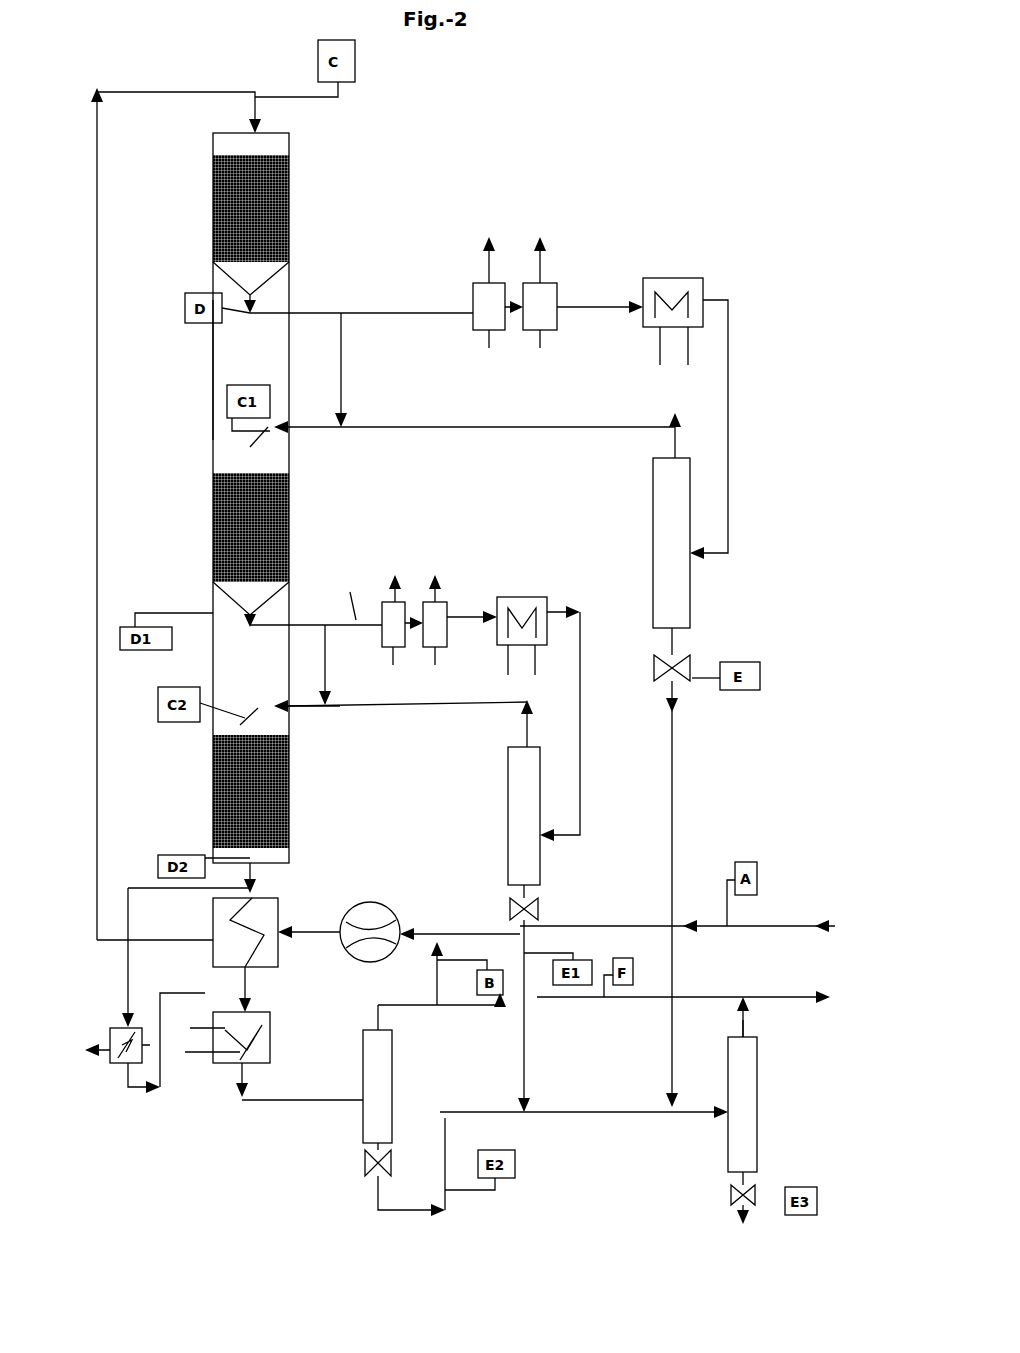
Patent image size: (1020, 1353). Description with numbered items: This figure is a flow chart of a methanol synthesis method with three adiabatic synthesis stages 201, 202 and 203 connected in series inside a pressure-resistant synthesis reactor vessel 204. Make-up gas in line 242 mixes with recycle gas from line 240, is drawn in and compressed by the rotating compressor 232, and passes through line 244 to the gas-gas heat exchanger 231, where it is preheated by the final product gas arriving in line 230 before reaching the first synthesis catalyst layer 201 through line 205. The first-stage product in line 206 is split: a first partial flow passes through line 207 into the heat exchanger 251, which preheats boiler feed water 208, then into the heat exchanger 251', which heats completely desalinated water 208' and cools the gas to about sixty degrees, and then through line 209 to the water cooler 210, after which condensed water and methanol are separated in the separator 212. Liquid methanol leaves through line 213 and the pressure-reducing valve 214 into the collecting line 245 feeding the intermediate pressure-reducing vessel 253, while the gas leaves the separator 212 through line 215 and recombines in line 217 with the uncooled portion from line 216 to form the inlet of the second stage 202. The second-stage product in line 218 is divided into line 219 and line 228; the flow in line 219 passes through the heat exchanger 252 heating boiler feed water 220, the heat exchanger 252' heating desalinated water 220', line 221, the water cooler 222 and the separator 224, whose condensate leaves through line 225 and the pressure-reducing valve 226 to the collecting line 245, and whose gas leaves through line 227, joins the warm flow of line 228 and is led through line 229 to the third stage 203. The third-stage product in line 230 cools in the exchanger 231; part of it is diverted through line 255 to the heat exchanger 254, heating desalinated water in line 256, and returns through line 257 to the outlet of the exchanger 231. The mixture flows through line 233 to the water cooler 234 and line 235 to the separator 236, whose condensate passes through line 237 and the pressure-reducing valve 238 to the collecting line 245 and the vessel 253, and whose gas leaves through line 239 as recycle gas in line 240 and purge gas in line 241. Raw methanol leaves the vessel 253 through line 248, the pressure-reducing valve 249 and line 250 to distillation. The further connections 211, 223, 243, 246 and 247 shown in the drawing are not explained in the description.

The first synthesis stage 201 is at (213, 225).
The second synthesis stage 202 is at (213, 502).
The third synthesis stage 203 is at (213, 803).
The synthesis reactor vessel 204 is at (213, 358).
The line 205 is at (97, 497).
The line 206 is at (305, 315).
The line 207 is at (383, 307).
The boiler feed water 208 is at (466, 260).
The completely desalinated water 208' is at (572, 260).
The line 209 is at (600, 299).
The water cooler 210 is at (690, 292).
The mixer outlet line 211 is at (728, 400).
The separator 212 is at (660, 565).
The line 213 is at (680, 652).
The pressure-reducing valve 214 is at (655, 881).
The line 215 is at (675, 437).
The line 216 is at (341, 345).
The line 217 is at (318, 427).
The line 218 is at (316, 611).
The line 219 is at (344, 596).
The boiler feed water 220 is at (365, 576).
The completely desalinated water 220' is at (449, 586).
The line 221 is at (467, 605).
The water cooler 222 is at (525, 600).
The mixer outlet line 223 is at (575, 723).
The separator 224 is at (527, 820).
The line 225 is at (532, 897).
The pressure-reducing valve 226 is at (537, 912).
The line 227 is at (527, 740).
The line 228 is at (338, 665).
The line 229 is at (314, 718).
The line 230 is at (262, 880).
The gas-gas heat exchanger 231 is at (213, 945).
The rotating compressor 232 is at (385, 920).
The line 233 is at (248, 985).
The water cooler 234 is at (240, 1052).
The line 235 is at (299, 1093).
The separator 236 is at (378, 1080).
The line 237 is at (339, 1159).
The pressure-reducing valve 238 is at (366, 1167).
The line 239 is at (378, 1025).
The line 240 is at (437, 982).
The line 241 is at (442, 1008).
The line 242 is at (677, 913).
The compressor inlet line 243 is at (425, 936).
The line 244 is at (325, 928).
The collecting line 245 is at (690, 1113).
The separator overhead line 246 is at (745, 1015).
The vapor product line 247 is at (684, 1000).
The line 248 is at (800, 1187).
The pressure-reducing valve 249 is at (731, 1194).
The line 250 is at (733, 1214).
The heat exchanger 251 is at (451, 319).
The heat exchanger 251' is at (558, 319).
The heat exchanger 252 is at (369, 642).
The heat exchanger 252' is at (441, 639).
The intermediate pressure-reducing vessel 253 is at (745, 1120).
The heat exchanger 254 is at (128, 1052).
The line 255 is at (128, 1000).
The line 256 is at (110, 1045).
The line 257 is at (182, 1040).